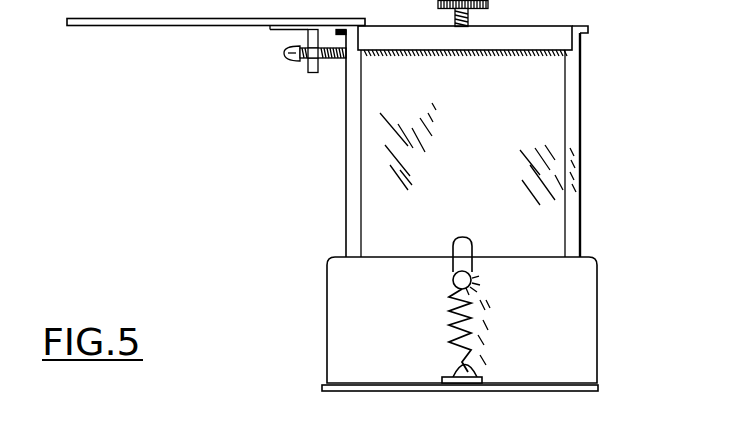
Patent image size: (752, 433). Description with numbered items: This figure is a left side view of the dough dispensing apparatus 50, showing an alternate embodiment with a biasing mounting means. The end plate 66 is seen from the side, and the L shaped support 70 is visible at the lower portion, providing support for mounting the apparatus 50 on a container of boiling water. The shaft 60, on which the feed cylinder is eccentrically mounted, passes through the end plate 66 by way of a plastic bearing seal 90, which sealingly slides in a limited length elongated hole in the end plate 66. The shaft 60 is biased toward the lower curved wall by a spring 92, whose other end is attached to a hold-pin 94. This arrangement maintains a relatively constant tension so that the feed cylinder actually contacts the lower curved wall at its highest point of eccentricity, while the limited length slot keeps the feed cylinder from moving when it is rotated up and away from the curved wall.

The apparatus for dispensing dough 50 is at (346, 141).
The end plate 66 is at (507, 146).
The L shaped support 70 is at (332, 271).
The plastic bearing seal 90 is at (463, 245).
The shaft 60 is at (472, 282).
The spring 92 is at (457, 315).
The hold-pin 94 is at (475, 373).